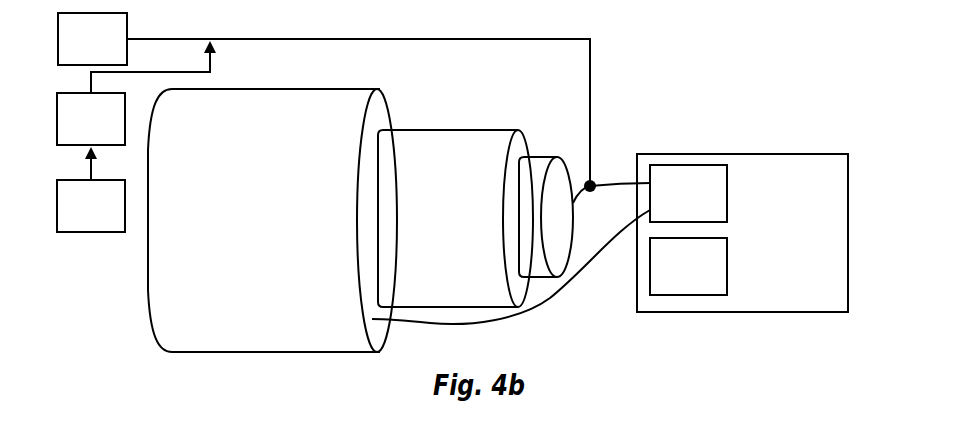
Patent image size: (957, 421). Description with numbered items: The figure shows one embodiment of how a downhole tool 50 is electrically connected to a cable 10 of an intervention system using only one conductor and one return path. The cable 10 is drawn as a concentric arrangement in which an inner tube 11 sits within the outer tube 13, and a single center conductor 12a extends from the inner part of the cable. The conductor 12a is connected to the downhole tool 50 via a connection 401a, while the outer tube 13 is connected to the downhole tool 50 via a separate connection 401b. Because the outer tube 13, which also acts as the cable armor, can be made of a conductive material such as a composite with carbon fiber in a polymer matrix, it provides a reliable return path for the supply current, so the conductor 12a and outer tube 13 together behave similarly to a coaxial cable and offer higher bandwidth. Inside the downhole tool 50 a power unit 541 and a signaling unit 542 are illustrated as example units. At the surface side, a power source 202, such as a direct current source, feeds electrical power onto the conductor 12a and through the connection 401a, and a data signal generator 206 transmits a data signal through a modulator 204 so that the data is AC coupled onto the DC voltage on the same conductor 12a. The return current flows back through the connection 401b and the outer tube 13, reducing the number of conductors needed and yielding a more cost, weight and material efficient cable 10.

The cable 10 is at (360, 197).
The inner housing 11 is at (466, 130).
The conductor 12a is at (541, 156).
The outer tube 13 is at (228, 89).
The downhole tool 50 is at (807, 154).
The power source 202 is at (92, 39).
The modulator 204 is at (91, 119).
The data signal generator 206 is at (91, 206).
The connection 401a is at (610, 183).
The connection 401b is at (598, 259).
The power unit 541 is at (688, 165).
The signaling unit 542 is at (700, 295).